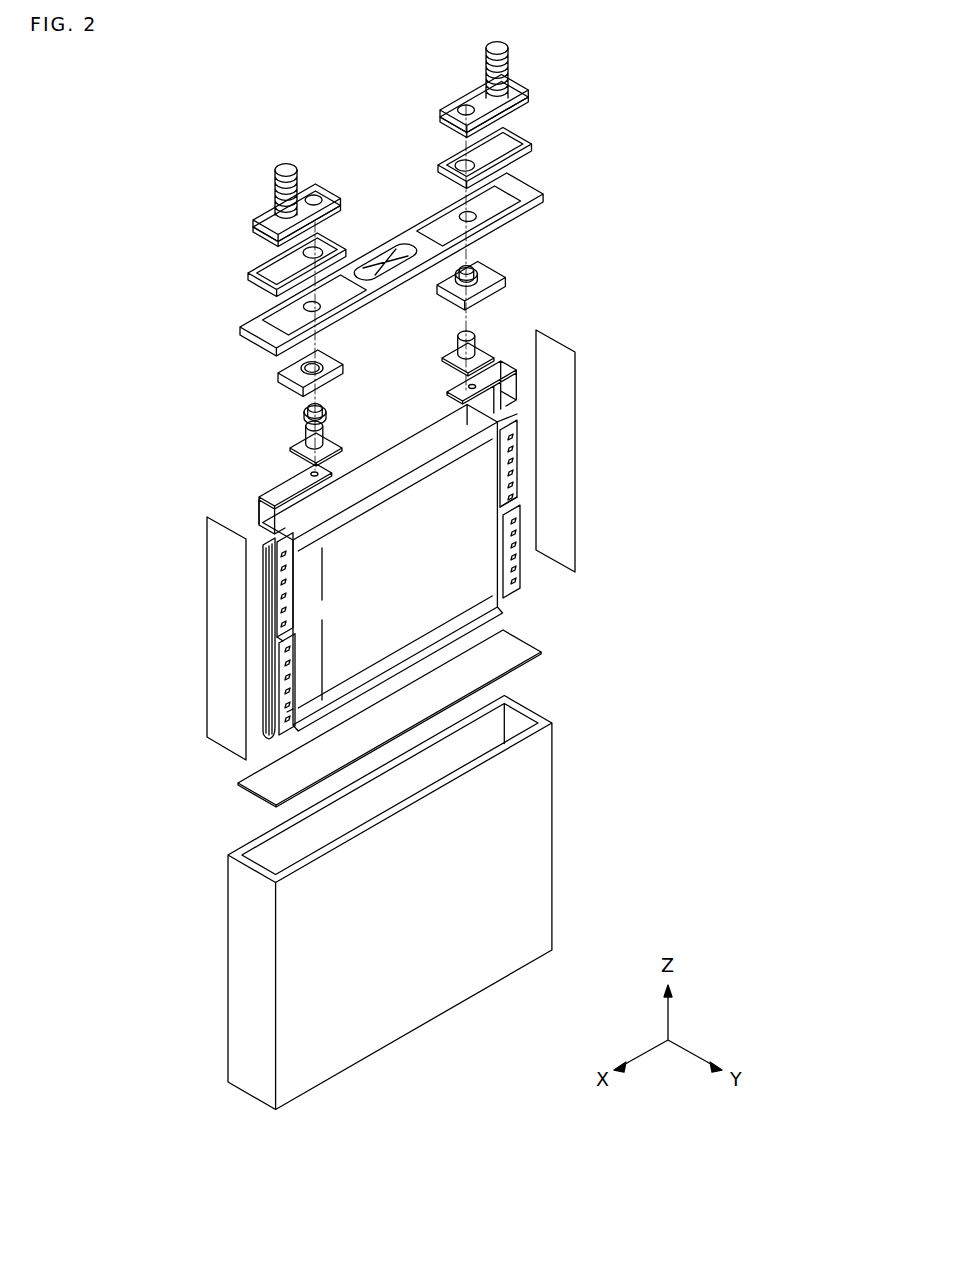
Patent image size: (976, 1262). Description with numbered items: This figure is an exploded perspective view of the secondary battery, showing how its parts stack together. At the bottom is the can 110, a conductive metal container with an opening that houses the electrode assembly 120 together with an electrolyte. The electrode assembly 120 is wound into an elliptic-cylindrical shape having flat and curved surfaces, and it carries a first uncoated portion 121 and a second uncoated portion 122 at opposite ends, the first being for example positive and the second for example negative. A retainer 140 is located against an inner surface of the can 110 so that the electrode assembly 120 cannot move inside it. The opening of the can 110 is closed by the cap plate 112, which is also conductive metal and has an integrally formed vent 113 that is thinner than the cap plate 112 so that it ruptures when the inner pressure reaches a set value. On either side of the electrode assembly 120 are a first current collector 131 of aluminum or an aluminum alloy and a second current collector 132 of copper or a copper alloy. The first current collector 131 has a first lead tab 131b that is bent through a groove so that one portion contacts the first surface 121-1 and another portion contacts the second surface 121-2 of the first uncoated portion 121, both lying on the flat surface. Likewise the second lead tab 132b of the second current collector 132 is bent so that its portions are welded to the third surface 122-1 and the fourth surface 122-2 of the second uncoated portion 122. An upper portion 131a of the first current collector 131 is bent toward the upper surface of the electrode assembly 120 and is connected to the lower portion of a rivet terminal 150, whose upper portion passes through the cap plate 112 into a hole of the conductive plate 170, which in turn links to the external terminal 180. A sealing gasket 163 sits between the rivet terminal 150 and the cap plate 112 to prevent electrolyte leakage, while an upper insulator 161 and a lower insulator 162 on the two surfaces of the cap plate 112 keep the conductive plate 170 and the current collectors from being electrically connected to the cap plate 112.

The can 110 is at (552, 808).
The cap plate 112 is at (426, 224).
The vent 113 is at (380, 262).
The electrode assembly 120 is at (512, 618).
The first uncoated portion 121 is at (270, 605).
The first surface 121-1 is at (270, 683).
The second surface 121-2 is at (283, 641).
The second uncoated portion 122 is at (522, 430).
The third surface 122-1 is at (520, 398).
The fourth surface 122-2 is at (518, 502).
The first current collector 131 is at (268, 487).
The upper portion of the first current collector 131a is at (259, 492).
The first lead tab 131b is at (286, 712).
The second current collector 132 is at (450, 392).
The second lead tab 132b is at (522, 578).
The retainer 140 is at (250, 790).
The rivet terminal 150 is at (300, 450).
The upper insulator 161 is at (518, 134).
The lower insulator 162 is at (298, 384).
The sealing gasket 163 is at (303, 414).
The conductive plate 170 is at (510, 82).
The external terminal 180 is at (503, 44).